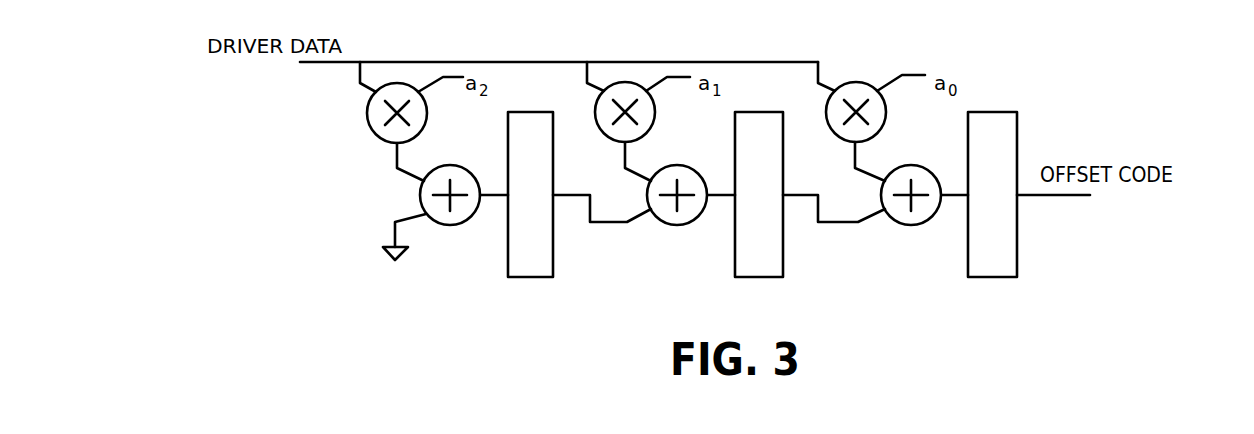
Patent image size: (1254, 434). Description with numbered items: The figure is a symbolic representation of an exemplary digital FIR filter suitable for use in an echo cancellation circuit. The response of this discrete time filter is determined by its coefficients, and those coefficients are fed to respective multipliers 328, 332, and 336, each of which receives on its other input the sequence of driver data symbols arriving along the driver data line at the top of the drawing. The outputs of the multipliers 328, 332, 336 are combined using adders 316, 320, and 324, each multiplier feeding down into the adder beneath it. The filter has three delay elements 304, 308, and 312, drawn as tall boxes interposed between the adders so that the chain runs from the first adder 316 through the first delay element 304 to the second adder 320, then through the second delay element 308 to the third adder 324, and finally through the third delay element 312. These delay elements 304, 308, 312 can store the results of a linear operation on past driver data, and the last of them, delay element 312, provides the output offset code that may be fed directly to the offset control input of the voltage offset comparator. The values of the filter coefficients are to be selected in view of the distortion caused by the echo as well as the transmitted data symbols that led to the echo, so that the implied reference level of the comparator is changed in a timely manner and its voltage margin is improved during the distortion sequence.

The delay element 304 is at (553, 260).
The delay element 308 is at (783, 260).
The delay element 312 is at (1017, 260).
The adder 316 is at (463, 226).
The adder 320 is at (695, 226).
The adder 324 is at (930, 226).
The multiplier 328 is at (428, 122).
The multiplier 332 is at (653, 122).
The multiplier 336 is at (886, 120).